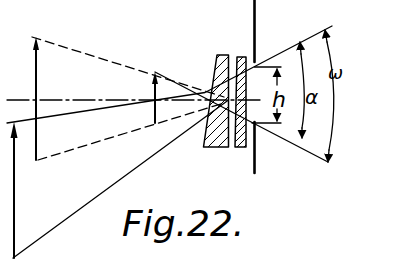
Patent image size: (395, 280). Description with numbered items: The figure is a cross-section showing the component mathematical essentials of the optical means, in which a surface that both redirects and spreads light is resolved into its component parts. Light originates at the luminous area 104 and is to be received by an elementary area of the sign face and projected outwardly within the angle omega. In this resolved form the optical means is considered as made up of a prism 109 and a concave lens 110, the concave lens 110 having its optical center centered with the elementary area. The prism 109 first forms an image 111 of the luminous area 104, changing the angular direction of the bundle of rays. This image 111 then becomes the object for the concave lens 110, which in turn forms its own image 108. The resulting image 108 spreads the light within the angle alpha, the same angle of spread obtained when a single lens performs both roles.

The luminous area 104 is at (14, 196).
The image 108 is at (153, 84).
The prism 109 is at (220, 54).
The concave lens 110 is at (242, 56).
The image 111 is at (36, 85).